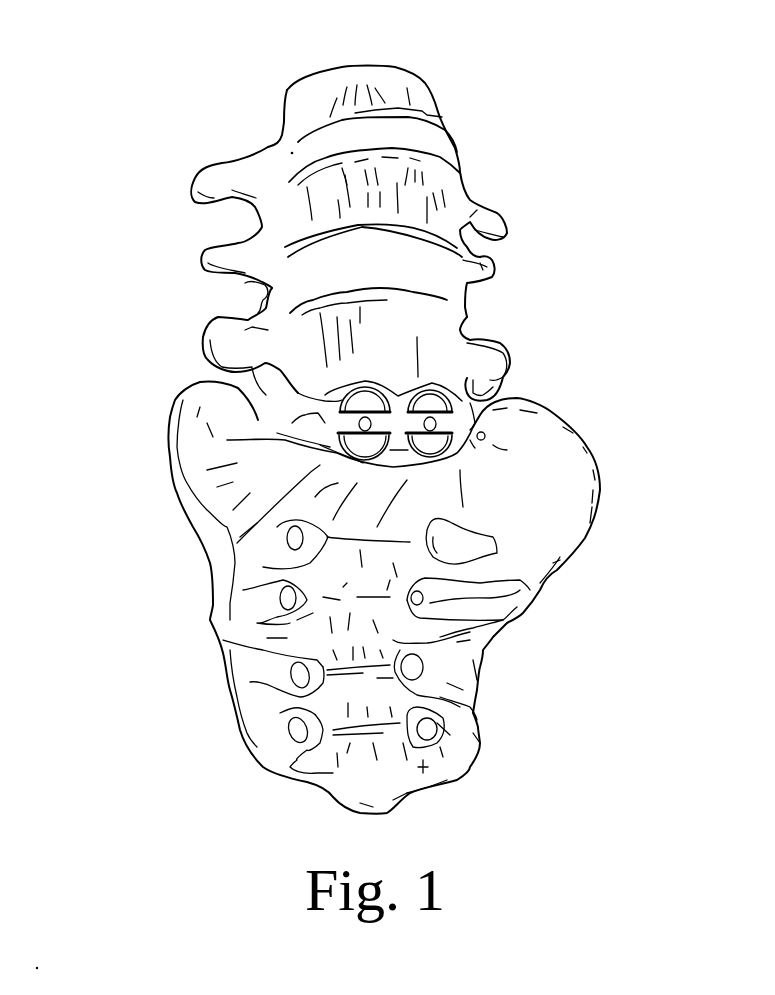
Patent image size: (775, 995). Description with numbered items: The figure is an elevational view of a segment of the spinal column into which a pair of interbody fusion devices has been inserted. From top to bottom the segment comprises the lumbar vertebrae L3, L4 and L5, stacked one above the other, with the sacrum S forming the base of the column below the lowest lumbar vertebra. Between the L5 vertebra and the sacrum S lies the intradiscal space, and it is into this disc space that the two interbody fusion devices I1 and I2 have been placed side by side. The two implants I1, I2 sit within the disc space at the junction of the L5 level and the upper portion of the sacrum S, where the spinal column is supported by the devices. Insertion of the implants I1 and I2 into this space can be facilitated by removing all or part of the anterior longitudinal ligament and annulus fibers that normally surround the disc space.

The L3 vertebra L3 is at (415, 85).
The L4 vertebra L4 is at (438, 178).
The L5 vertebral level L5 is at (433, 310).
The interbody fusion device I1 is at (358, 404).
The interbody fusion device I2 is at (435, 404).
The sacrum S is at (560, 530).